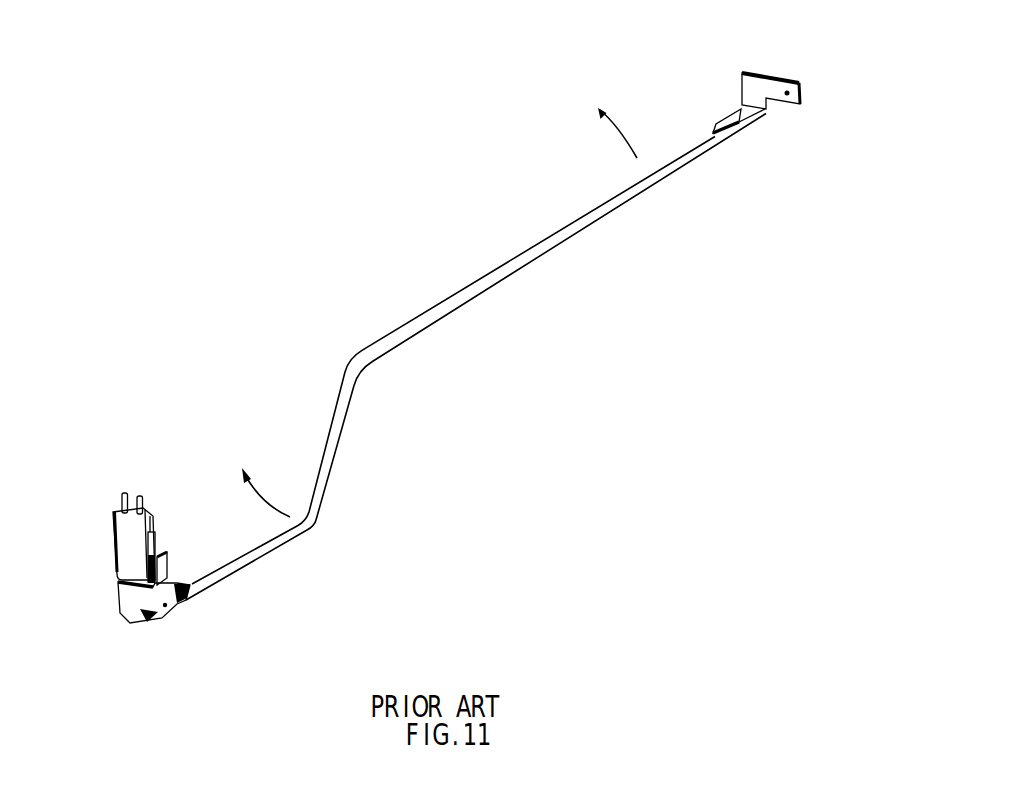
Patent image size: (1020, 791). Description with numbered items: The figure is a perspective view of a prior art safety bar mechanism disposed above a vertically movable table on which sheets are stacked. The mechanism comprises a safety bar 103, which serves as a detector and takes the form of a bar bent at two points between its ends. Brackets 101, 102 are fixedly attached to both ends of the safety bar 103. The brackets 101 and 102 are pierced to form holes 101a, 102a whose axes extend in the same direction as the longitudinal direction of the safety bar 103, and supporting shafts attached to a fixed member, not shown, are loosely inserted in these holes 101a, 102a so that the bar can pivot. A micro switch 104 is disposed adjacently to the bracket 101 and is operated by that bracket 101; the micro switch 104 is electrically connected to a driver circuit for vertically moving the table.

The bracket 101 is at (118, 617).
The hole 101a is at (165, 607).
The bracket 102 is at (757, 83).
The hole 102a is at (787, 96).
The safety bar 103 is at (408, 332).
The micro switch 104 is at (123, 563).